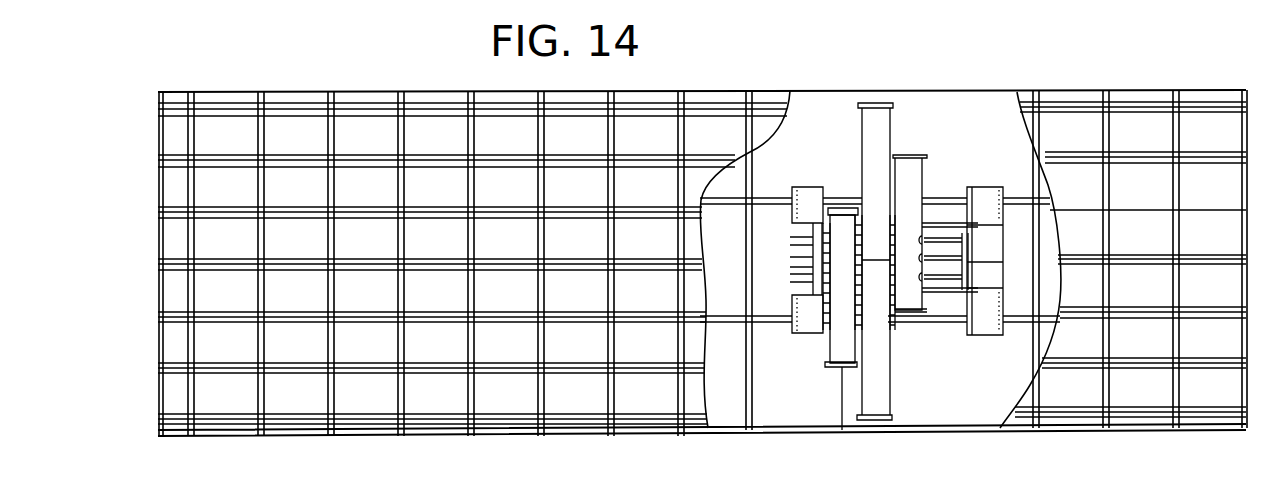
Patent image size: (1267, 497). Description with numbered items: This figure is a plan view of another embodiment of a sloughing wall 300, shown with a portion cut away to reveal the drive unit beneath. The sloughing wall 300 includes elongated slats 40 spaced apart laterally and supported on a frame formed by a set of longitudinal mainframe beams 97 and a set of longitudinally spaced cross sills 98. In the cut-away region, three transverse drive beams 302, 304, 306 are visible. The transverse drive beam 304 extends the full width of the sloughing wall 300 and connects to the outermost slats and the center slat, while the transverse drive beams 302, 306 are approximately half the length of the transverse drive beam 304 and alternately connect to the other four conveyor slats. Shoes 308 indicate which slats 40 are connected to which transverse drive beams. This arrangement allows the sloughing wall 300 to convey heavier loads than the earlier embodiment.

The sloughing wall 300 is at (294, 86).
The slats 40 is at (205, 205).
The longitudinal mainframe beams 97 is at (777, 196).
The cross sills 98 is at (1028, 343).
The transverse drive beam 302 is at (840, 432).
The transverse drive beam 304 is at (893, 410).
The transverse drive beam 306 is at (913, 313).
The shoes 308 is at (846, 209).